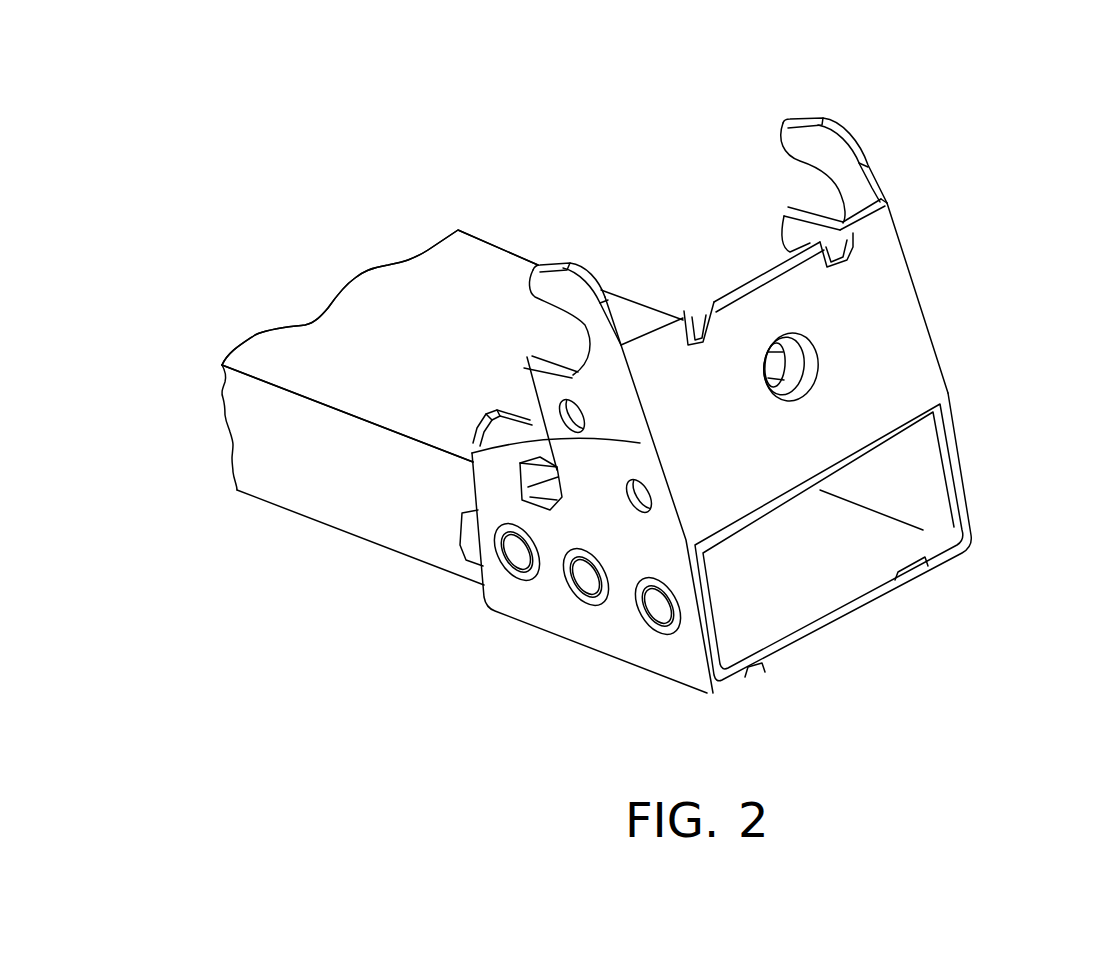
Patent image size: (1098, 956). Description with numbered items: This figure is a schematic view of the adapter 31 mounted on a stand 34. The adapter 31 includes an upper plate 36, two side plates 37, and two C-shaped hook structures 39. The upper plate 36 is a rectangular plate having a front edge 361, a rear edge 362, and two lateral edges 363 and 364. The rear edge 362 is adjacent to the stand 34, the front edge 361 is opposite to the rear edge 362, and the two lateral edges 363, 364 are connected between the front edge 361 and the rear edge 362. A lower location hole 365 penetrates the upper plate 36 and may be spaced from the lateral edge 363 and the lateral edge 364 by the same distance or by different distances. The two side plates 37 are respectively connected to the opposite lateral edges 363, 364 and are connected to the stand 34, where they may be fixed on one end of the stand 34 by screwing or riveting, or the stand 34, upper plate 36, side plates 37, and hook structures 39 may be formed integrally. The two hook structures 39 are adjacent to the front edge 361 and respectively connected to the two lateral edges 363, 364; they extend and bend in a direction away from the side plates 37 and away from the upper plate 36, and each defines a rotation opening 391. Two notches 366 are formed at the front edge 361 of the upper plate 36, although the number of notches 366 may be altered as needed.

The adapter 31 is at (210, 90).
The stand 34 is at (300, 488).
The upper plate 36 is at (900, 335).
The side plates 37 is at (547, 385).
The hook structures 39 is at (547, 287).
The front edge 361 is at (742, 278).
The rear edge 362 is at (728, 535).
The lateral edge 363 is at (920, 290).
The lateral edge 364 is at (513, 470).
The lower location hole 365 is at (773, 370).
The notches 366 is at (693, 327).
The rotation opening 391 is at (538, 328).